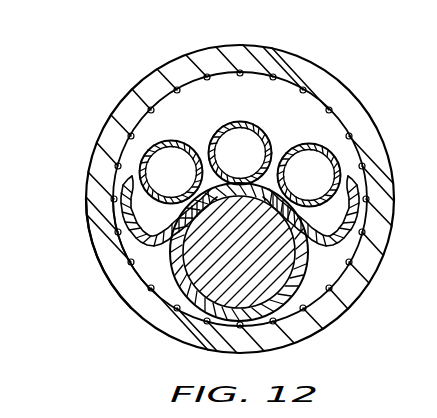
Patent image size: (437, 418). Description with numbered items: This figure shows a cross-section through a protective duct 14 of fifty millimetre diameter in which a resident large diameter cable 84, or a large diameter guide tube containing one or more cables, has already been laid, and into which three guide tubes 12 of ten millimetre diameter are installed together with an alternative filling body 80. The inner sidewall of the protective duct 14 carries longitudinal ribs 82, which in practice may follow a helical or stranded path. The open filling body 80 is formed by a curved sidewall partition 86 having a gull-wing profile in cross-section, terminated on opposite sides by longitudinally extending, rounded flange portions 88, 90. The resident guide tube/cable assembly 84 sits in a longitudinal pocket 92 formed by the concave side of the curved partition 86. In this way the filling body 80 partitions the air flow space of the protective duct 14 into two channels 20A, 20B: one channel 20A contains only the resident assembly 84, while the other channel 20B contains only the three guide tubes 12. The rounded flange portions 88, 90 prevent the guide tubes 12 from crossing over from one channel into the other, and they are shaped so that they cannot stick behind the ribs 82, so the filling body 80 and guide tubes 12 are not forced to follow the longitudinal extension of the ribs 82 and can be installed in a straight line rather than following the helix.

The guide tubes 12 is at (236, 122).
The protective duct 14 is at (117, 113).
The channel 20A is at (360, 290).
The channel 20B is at (281, 73).
The filling body 80 is at (330, 271).
The longitudinal ribs 82 is at (331, 86).
The large diameter cable 84 is at (125, 291).
The curved sidewall partition 86 is at (277, 162).
The rounded flange portion 88 is at (127, 221).
The rounded flange portion 90 is at (390, 167).
The longitudinal pocket 92 is at (147, 257).